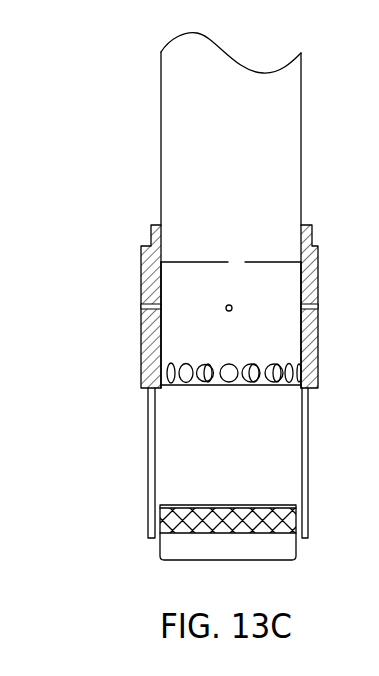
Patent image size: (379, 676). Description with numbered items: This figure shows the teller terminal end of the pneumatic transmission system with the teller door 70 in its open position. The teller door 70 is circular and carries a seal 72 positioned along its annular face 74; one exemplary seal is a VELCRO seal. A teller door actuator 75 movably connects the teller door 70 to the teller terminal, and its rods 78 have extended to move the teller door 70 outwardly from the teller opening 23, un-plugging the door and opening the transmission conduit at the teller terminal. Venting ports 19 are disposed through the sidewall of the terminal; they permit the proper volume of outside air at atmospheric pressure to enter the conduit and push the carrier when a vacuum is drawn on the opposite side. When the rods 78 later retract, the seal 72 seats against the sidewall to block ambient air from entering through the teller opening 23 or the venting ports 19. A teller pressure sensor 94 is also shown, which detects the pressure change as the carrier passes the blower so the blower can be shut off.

The venting ports 19 is at (288, 364).
The teller opening 23 is at (283, 386).
The teller pressure sensor 94 is at (230, 299).
The teller door actuator 75 is at (148, 439).
The rods 78 is at (309, 446).
The seal 72 is at (160, 521).
The annular face 74 is at (160, 545).
The teller door 70 is at (196, 561).